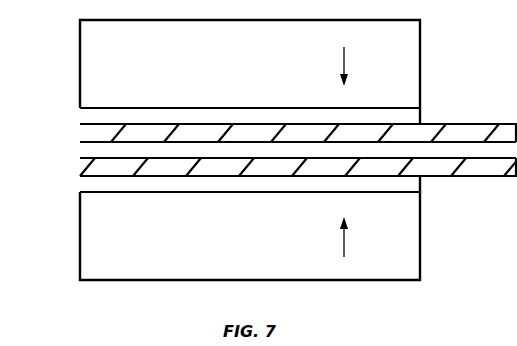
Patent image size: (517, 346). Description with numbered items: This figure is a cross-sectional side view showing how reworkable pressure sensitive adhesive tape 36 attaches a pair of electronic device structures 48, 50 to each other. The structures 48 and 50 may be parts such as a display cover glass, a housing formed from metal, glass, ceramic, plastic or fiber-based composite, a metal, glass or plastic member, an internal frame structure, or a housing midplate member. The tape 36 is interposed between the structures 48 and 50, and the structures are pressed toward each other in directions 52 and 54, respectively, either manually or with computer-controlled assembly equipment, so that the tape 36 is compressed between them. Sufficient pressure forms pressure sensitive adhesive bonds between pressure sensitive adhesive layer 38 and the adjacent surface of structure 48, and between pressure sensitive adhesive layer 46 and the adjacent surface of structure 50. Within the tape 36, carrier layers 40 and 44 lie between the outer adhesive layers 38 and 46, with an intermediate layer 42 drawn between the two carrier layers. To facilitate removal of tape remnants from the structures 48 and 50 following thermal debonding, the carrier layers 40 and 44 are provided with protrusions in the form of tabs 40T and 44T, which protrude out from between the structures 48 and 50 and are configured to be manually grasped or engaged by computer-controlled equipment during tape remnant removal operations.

The pressure sensitive adhesive tape 36 is at (265, 183).
The pressure sensitive adhesive layer 38 is at (125, 116).
The carrier layer 40 is at (102, 132).
The tab 40T is at (516, 120).
The separator layer 42 is at (404, 150).
The carrier layer 44 is at (102, 170).
The tab 44T is at (516, 178).
The pressure sensitive adhesive layer 46 is at (125, 185).
The structure 48 is at (414, 43).
The structure 50 is at (414, 255).
The direction 52 is at (342, 62).
The direction 54 is at (342, 240).